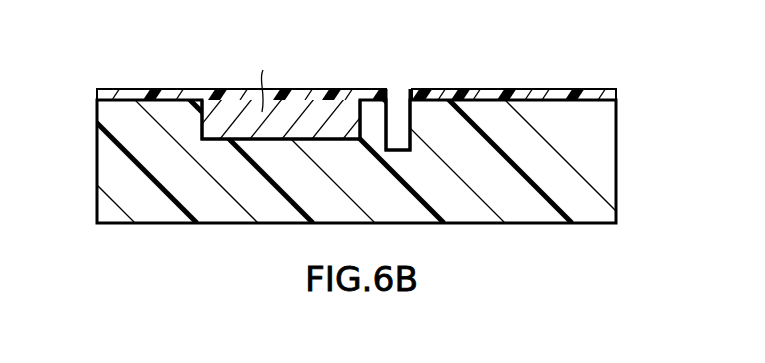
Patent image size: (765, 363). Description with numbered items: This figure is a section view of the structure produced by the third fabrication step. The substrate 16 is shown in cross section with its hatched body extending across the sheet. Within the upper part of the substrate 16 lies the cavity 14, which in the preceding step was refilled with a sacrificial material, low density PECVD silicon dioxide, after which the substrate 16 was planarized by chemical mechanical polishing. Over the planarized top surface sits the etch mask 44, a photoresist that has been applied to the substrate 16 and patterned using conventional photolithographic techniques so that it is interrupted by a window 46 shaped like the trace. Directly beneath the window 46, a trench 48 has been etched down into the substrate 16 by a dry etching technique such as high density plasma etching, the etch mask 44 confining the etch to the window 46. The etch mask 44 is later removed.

The cavity 14 is at (339, 140).
The substrate 16 is at (597, 164).
The etch mask 44 is at (135, 88).
The window 46 is at (408, 88).
The trench 48 is at (393, 98).